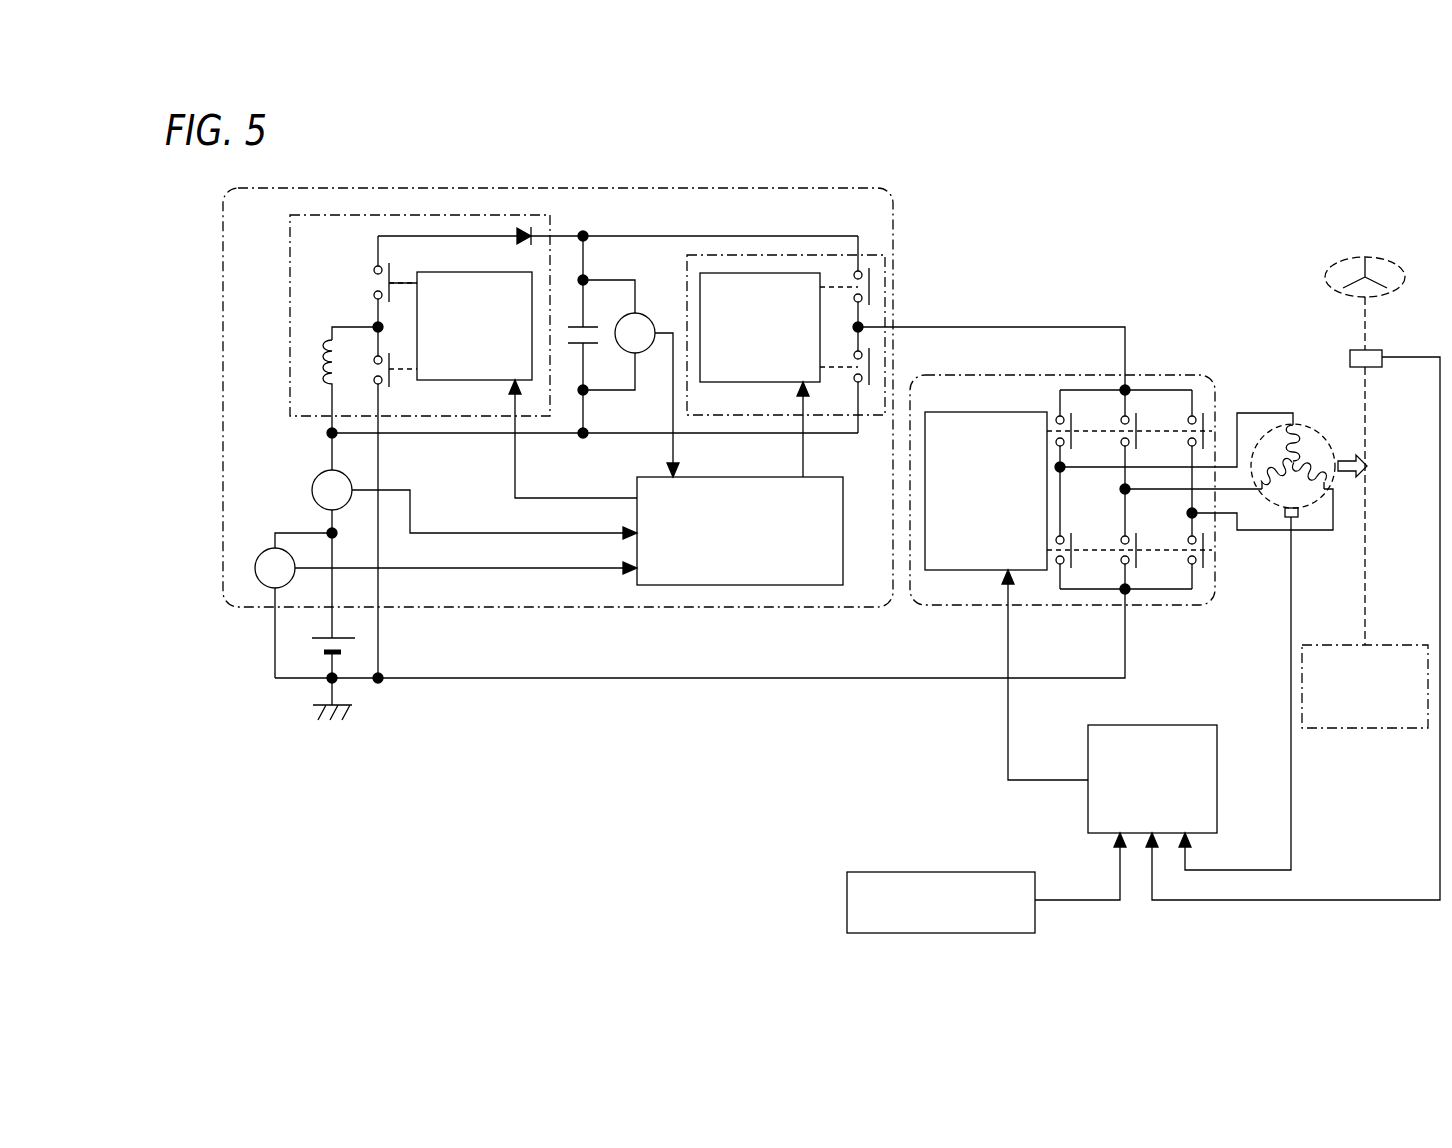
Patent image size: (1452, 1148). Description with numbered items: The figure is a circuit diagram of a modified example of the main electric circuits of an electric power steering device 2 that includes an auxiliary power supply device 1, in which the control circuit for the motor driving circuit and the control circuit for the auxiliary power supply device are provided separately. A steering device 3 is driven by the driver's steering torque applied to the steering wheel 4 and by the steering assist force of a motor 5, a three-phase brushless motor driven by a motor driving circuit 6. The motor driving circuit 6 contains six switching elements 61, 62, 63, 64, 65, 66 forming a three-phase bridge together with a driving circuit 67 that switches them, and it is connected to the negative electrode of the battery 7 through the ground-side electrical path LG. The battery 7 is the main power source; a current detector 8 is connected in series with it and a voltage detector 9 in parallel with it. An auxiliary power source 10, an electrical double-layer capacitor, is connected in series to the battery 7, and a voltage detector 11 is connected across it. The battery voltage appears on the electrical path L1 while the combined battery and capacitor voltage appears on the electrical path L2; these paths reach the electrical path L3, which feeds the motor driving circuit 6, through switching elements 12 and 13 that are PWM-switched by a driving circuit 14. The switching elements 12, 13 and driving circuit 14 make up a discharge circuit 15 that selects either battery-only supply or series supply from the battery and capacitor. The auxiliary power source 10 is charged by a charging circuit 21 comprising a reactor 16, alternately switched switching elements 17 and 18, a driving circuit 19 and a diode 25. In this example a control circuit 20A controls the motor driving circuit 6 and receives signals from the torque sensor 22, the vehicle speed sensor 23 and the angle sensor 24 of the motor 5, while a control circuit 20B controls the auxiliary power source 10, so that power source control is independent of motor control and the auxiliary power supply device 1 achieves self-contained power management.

The auxiliary power supply device 1 is at (864, 183).
The electric power steering device 2 is at (1224, 234).
The steering device 3 is at (1388, 643).
The steering wheel 4 is at (1384, 256).
The motor 5 is at (1321, 430).
The motor driving circuit 6 is at (1166, 375).
The battery 7 is at (345, 636).
The current detector 8 is at (323, 470).
The voltage detector 9 is at (268, 551).
The auxiliary power source 10 is at (568, 346).
The voltage detector 11 is at (645, 315).
The switching element 12 is at (878, 366).
The switching element 13 is at (878, 286).
The driving circuit 14 is at (803, 273).
The discharge circuit 15 is at (880, 252).
The reactor 16 is at (320, 370).
The switching element 17 is at (370, 371).
The switching element 18 is at (372, 283).
The driving circuit 19 is at (533, 274).
The control circuit 20A is at (1218, 740).
The control circuit 20B is at (846, 492).
The charging circuit 21 is at (352, 213).
The torque sensor 22 is at (1375, 350).
The vehicle speed sensor 23 is at (1003, 872).
The angle sensor 24 is at (1293, 518).
The diode 25 is at (530, 232).
The switching element 61 is at (1073, 424).
The switching element 62 is at (1073, 543).
The switching element 63 is at (1139, 424).
The switching element 64 is at (1139, 543).
The switching element 65 is at (1212, 429).
The switching element 66 is at (1212, 550).
The driving circuit 67 is at (1007, 412).
The electrical path L1 is at (666, 431).
The electrical path L2 is at (666, 233).
The electrical path L3 is at (948, 326).
The ground-side electrical path LG is at (606, 678).